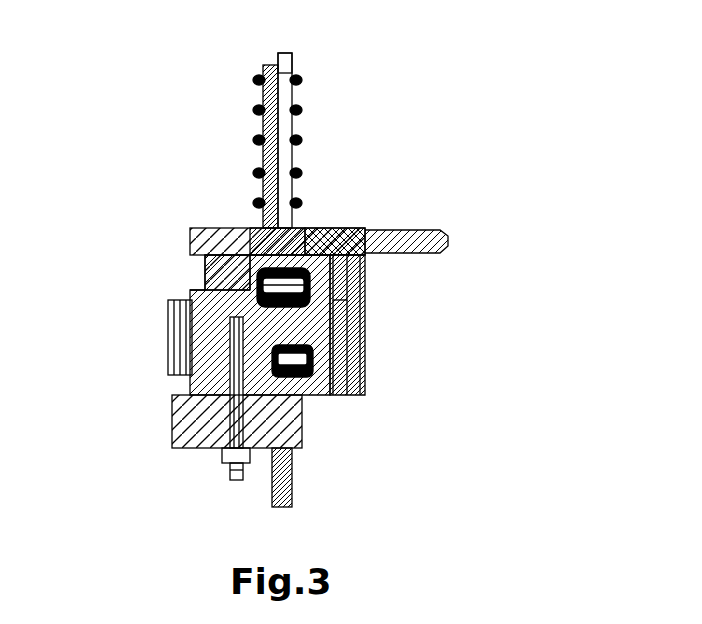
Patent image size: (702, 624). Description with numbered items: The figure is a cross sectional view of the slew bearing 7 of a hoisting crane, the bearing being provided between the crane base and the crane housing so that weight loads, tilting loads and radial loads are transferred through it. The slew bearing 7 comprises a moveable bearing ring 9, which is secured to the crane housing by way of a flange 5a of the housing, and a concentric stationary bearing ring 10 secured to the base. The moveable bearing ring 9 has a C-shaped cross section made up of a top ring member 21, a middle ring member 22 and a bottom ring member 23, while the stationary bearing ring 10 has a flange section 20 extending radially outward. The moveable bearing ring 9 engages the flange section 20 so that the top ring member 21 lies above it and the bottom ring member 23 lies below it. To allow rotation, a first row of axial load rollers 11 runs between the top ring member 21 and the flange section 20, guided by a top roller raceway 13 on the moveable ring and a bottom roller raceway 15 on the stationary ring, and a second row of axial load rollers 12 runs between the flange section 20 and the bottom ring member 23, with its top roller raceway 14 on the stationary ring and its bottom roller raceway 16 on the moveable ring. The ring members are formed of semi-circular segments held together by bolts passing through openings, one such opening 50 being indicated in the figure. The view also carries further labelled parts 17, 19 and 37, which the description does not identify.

The slew bearing 7 is at (379, 94).
The bolt 37 is at (315, 67).
The threaded rod 19 is at (243, 140).
The housing 17 is at (192, 280).
The stationary bearing ring 10 is at (150, 335).
The top roller raceway 13 is at (310, 228).
The first row of axial load rollers 11 is at (333, 228).
The opening 50 is at (375, 228).
The flange 5a is at (412, 232).
The top ring member 21 is at (382, 276).
The bottom roller raceway 15 is at (386, 314).
The middle ring member 22 is at (387, 320).
The moveable bearing ring 9 is at (385, 333).
The bottom ring member 23 is at (382, 367).
The top roller raceway 14 is at (363, 370).
The bottom roller raceway 16 is at (365, 388).
The flange section 20 is at (285, 328).
The second row of axial load rollers 12 is at (300, 398).